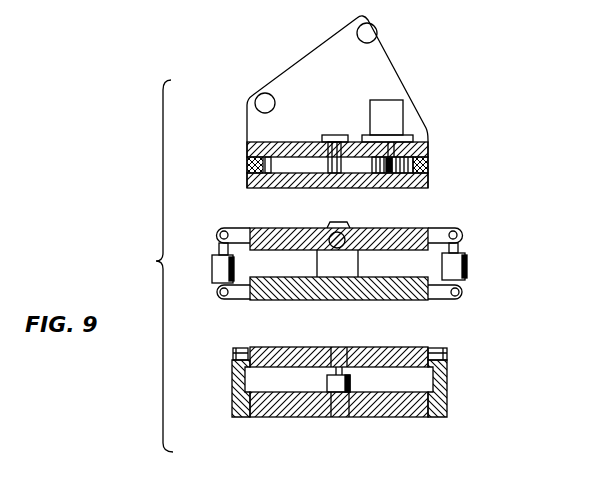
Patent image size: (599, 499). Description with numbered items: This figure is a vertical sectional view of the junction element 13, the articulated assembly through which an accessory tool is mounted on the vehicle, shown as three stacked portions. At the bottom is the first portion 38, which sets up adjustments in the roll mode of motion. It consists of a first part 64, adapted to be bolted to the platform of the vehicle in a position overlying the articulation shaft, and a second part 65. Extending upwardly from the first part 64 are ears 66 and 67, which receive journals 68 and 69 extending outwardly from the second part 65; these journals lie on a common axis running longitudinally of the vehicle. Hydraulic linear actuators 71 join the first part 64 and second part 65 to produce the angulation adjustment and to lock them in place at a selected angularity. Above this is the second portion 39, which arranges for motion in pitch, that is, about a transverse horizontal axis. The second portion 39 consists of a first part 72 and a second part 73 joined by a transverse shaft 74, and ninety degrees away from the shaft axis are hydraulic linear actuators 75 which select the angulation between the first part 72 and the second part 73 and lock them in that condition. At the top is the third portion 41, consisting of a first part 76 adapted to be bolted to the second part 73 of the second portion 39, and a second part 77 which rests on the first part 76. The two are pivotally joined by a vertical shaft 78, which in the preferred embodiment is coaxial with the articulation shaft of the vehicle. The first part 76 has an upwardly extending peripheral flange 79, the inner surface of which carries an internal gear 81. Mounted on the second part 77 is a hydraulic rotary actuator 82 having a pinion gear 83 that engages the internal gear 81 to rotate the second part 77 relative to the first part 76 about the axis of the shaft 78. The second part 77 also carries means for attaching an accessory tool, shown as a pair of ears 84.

The junction element 13 is at (148, 266).
The ears 84 is at (383, 60).
The hydraulic rotary actuator 82 is at (400, 115).
The vertical shaft 78 is at (337, 135).
The second part of third portion 77 is at (247, 149).
The third portion 41 is at (428, 147).
The peripheral flange 79 is at (428, 163).
The internal gear 81 is at (272, 188).
The first part of third portion 76 is at (337, 188).
The pinion gear 83 is at (377, 190).
The second part of second portion 73 is at (430, 228).
The transverse shaft 74 is at (330, 247).
The hydraulic linear actuators 75 is at (222, 268).
The first part of second portion 72 is at (320, 292).
The second portion 39 is at (430, 295).
The second part of first portion 65 is at (360, 352).
The journal 69 is at (233, 355).
The journal 68 is at (447, 357).
The ear 67 is at (233, 378).
The hydraulic linear actuators 71 is at (328, 385).
The ear 66 is at (447, 375).
The first portion 38 is at (447, 402).
The first part of first portion 64 is at (283, 408).